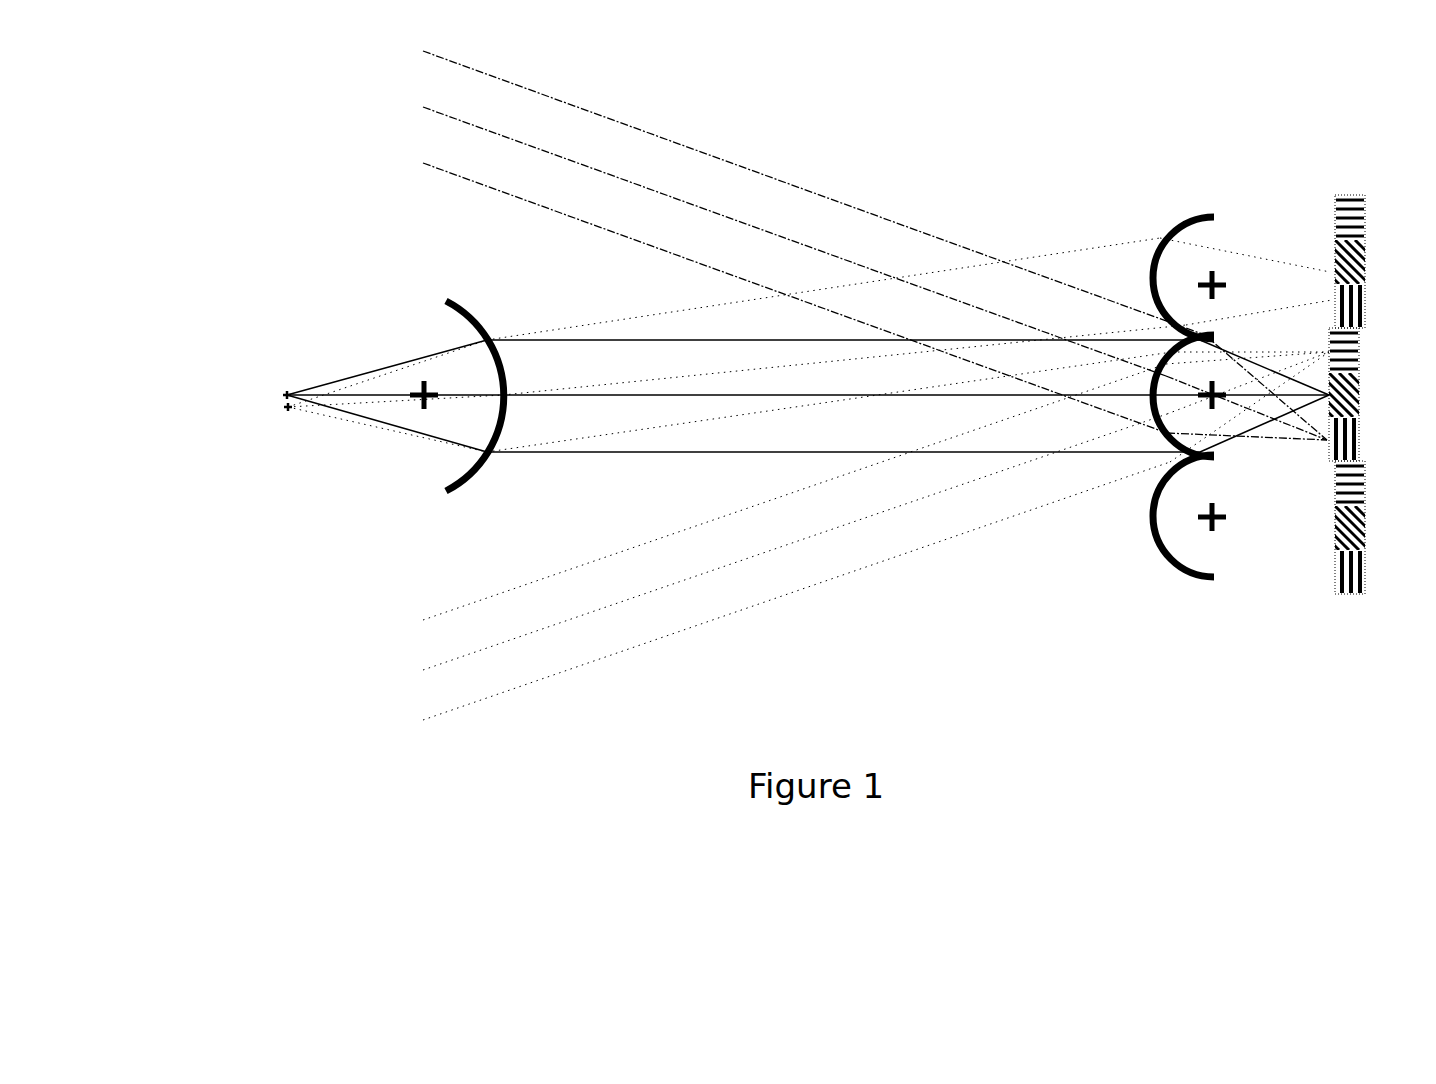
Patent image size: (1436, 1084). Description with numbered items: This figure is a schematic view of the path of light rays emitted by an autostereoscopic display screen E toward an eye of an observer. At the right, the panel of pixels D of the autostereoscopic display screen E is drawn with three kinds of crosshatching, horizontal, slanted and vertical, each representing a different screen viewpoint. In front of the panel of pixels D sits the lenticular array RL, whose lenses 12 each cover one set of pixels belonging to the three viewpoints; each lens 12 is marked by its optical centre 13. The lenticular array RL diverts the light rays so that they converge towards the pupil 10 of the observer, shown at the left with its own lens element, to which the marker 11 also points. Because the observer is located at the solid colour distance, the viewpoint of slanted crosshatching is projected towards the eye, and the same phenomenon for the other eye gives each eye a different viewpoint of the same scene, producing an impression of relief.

The pupil 10 is at (480, 481).
The point light source 11 is at (285, 418).
The lens 12 is at (1150, 240).
The optical centre 13 is at (1213, 262).
The lenticular array RL is at (1201, 606).
The panel of pixels D is at (1348, 642).
The autostereoscopic display screen E is at (1392, 747).